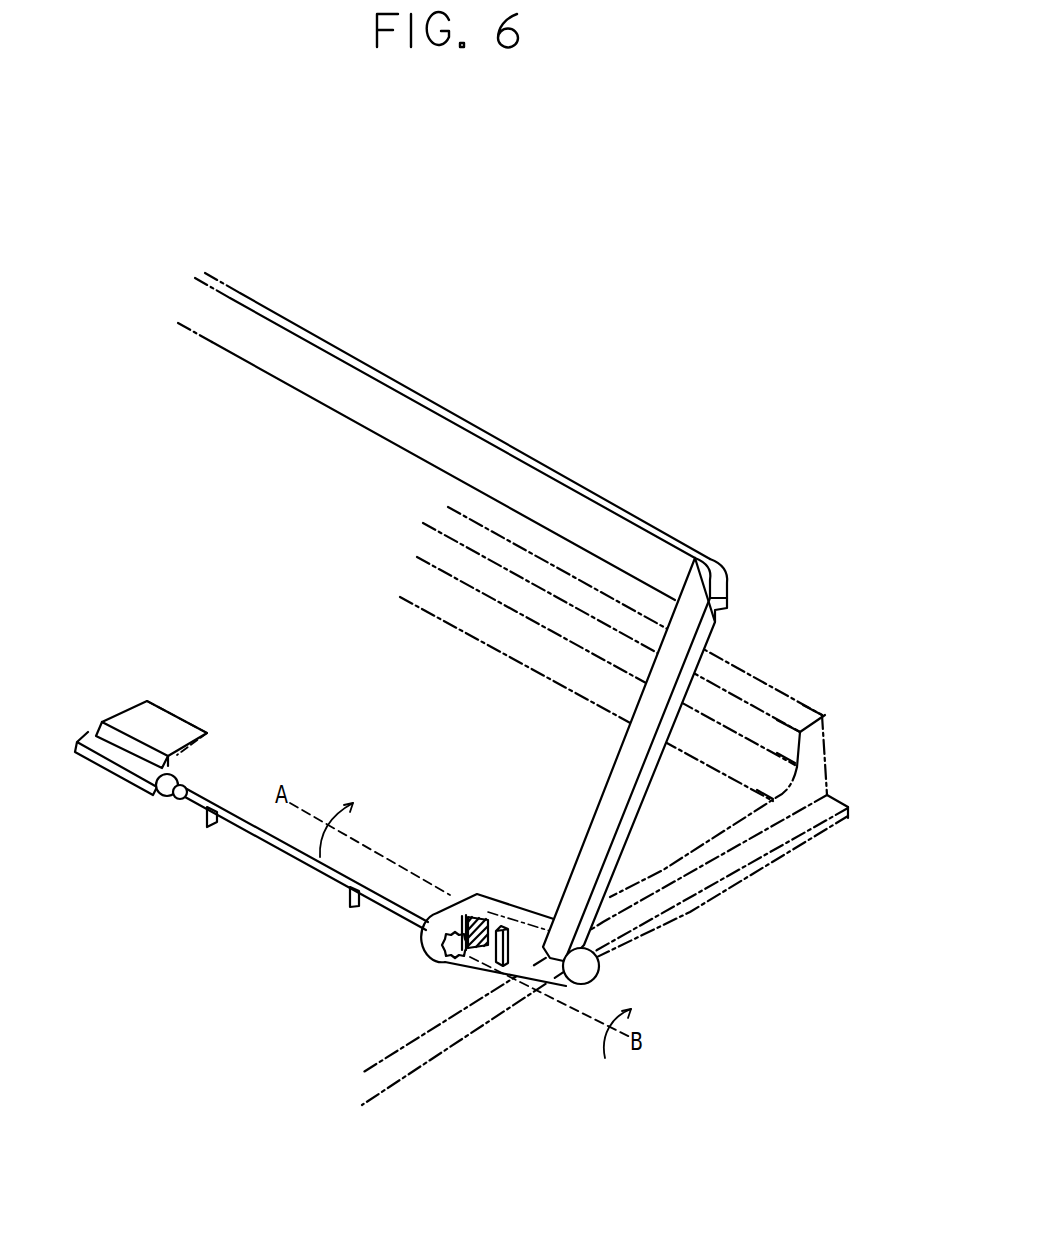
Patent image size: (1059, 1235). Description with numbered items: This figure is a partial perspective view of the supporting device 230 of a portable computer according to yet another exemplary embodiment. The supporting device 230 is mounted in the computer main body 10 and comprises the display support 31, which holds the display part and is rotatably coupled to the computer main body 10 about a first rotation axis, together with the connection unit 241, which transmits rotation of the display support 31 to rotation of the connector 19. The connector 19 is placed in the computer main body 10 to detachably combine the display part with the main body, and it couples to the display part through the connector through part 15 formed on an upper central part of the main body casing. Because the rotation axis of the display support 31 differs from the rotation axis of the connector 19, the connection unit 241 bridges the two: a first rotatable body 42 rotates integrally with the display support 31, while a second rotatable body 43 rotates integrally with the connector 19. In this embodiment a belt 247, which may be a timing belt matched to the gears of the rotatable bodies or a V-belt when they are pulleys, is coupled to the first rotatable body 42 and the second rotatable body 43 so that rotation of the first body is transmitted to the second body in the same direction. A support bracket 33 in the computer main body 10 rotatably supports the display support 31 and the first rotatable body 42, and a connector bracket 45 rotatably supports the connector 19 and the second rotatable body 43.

The computer main body 10 is at (440, 1040).
The connector through part 15 is at (167, 710).
The connector 19 is at (139, 779).
The display support 31 is at (613, 797).
The support bracket 33 is at (512, 960).
The first rotatable body 42 is at (478, 913).
The second rotatable body 43 is at (447, 907).
The connector bracket 45 is at (350, 897).
The supporting device 230 is at (543, 786).
The connection unit 241 is at (482, 823).
The belt 247 is at (457, 913).